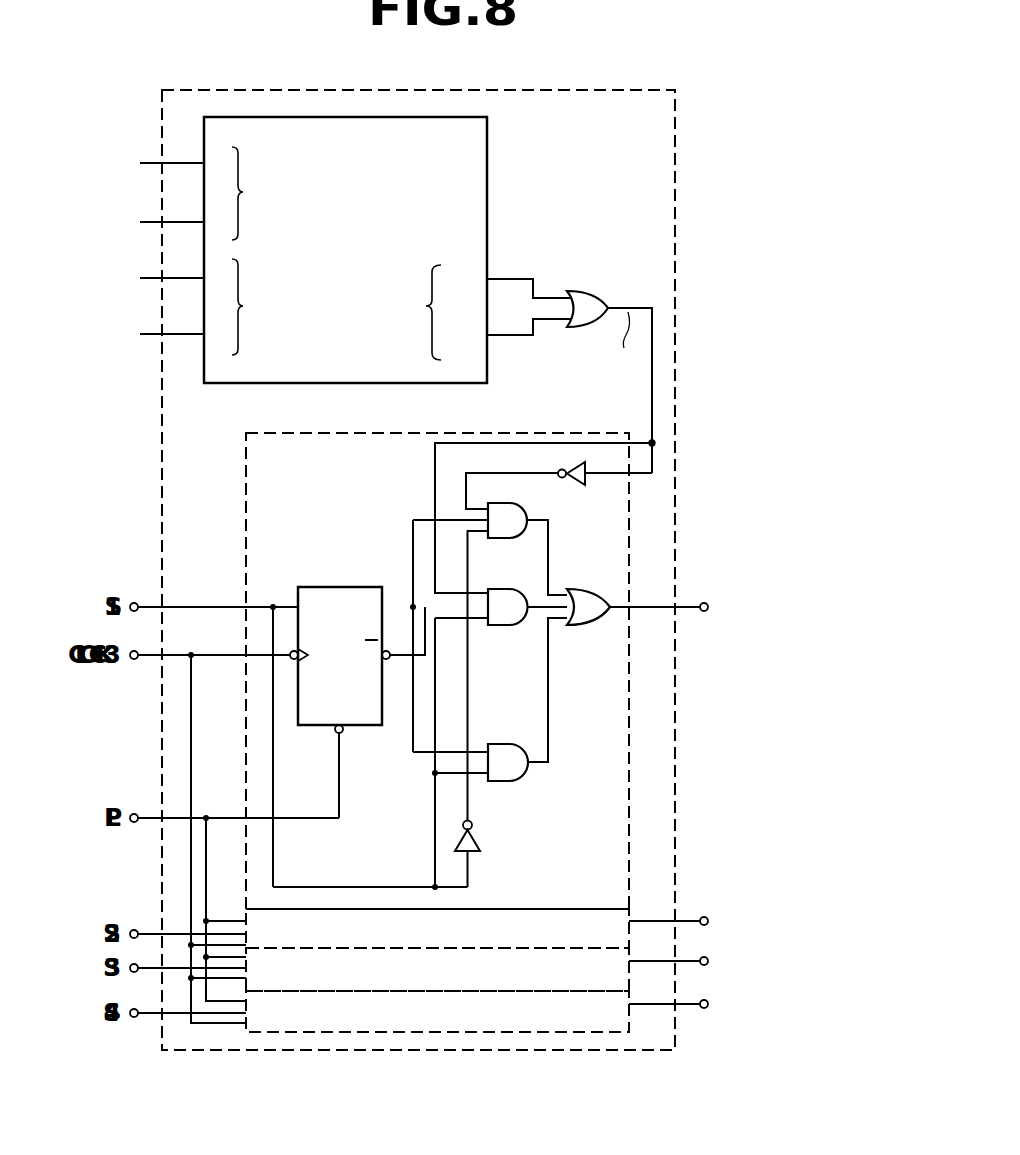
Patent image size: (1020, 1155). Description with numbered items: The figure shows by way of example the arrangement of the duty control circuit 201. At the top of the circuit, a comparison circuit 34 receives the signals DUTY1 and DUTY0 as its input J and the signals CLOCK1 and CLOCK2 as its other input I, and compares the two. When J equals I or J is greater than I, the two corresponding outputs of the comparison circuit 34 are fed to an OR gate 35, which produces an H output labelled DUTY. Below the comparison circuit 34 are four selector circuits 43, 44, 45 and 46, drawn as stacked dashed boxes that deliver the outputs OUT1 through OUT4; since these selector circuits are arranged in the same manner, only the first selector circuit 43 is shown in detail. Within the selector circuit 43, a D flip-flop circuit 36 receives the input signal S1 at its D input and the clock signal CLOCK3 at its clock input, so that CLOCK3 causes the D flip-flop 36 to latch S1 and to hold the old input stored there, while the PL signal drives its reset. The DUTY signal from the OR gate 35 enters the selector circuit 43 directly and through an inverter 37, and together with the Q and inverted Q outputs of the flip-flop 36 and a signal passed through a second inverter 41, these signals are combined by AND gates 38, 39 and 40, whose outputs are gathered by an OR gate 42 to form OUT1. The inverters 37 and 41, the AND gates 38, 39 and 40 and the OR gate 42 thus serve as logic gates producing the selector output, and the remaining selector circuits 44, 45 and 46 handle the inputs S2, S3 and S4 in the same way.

The duty control circuit 201 is at (616, 90).
The comparison circuit 34 is at (488, 143).
The OR gate 35 is at (603, 290).
The D flip-flop circuit 36 is at (361, 586).
The inverter 37 is at (576, 486).
The AND gate 38 is at (520, 503).
The AND gate 39 is at (508, 628).
The AND gate 40 is at (521, 745).
The inverter 41 is at (480, 841).
The OR gate 42 is at (597, 590).
The selector circuit 43 is at (629, 740).
The selector circuit 44 is at (630, 913).
The selector circuit 45 is at (630, 958).
The selector circuit 46 is at (630, 1000).